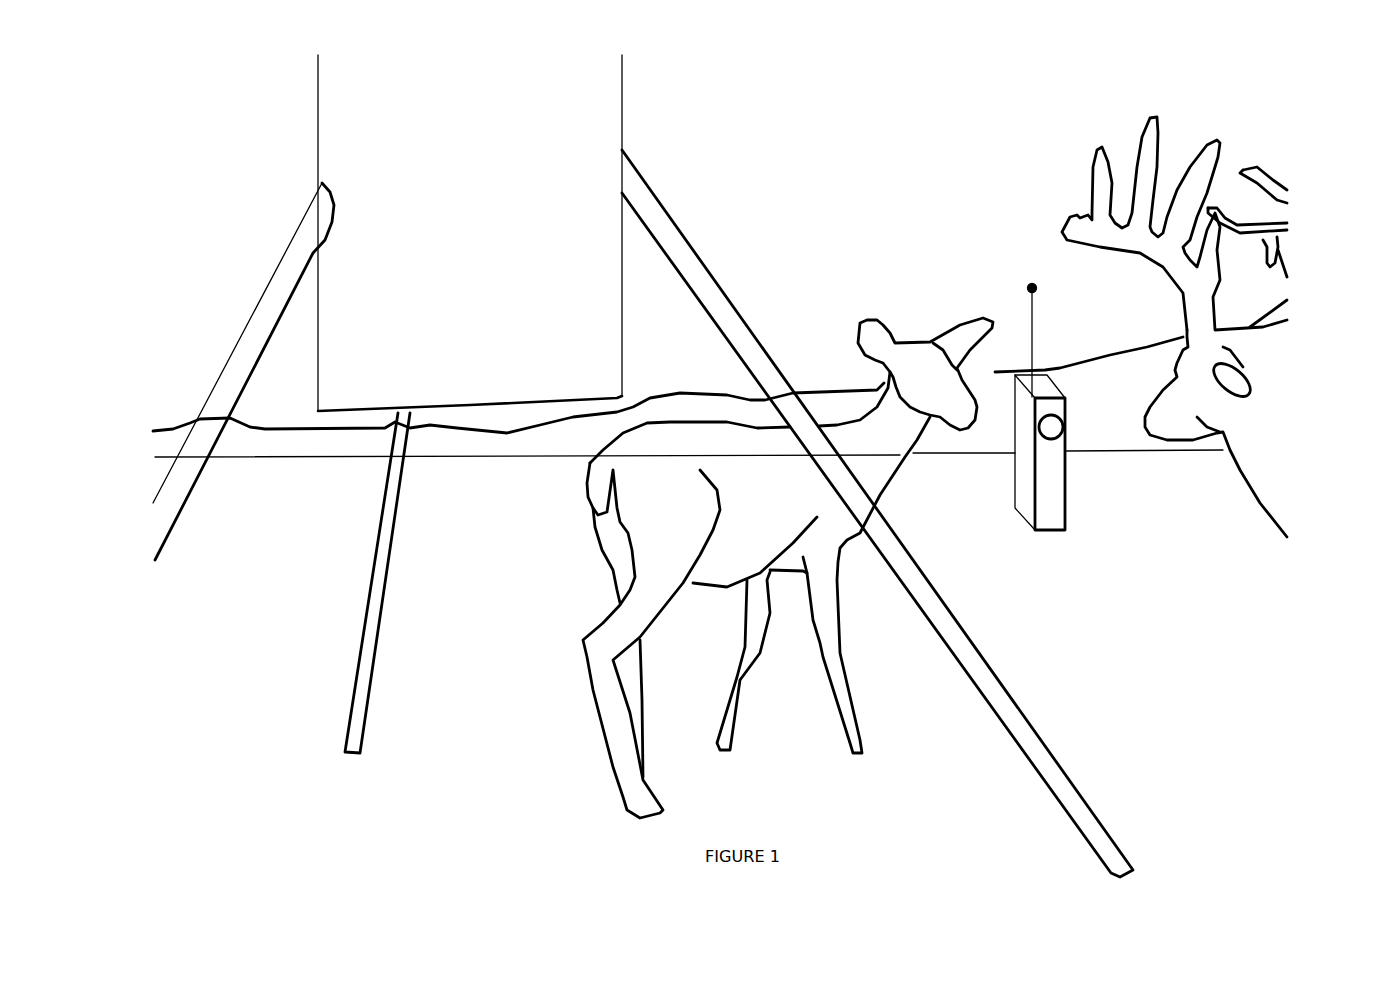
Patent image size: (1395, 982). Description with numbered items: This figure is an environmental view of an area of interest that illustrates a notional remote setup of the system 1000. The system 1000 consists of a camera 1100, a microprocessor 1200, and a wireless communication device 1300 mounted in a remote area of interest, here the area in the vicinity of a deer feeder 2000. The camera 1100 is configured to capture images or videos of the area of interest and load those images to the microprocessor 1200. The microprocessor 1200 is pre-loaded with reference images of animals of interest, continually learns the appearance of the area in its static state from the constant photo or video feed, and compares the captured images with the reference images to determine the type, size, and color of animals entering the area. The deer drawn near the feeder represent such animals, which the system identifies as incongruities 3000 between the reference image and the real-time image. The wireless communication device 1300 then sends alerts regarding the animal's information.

The system 1000 is at (967, 332).
The camera 1100 is at (1052, 423).
The microprocessor 1200 is at (1042, 473).
The wireless communication device 1300 is at (1032, 320).
The deer feeder 2000 is at (498, 361).
The incongruities 3000 is at (768, 500).